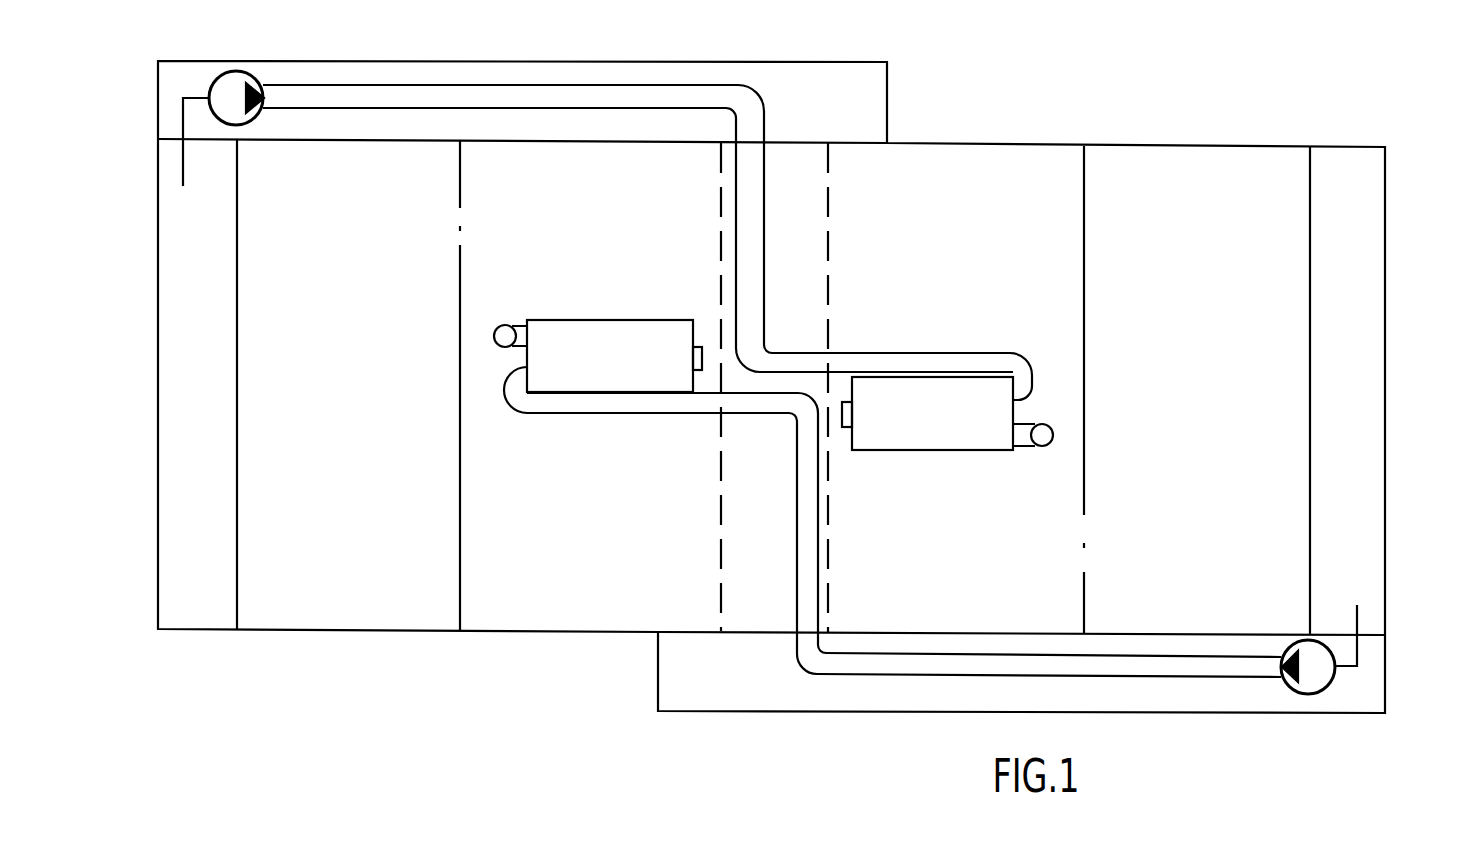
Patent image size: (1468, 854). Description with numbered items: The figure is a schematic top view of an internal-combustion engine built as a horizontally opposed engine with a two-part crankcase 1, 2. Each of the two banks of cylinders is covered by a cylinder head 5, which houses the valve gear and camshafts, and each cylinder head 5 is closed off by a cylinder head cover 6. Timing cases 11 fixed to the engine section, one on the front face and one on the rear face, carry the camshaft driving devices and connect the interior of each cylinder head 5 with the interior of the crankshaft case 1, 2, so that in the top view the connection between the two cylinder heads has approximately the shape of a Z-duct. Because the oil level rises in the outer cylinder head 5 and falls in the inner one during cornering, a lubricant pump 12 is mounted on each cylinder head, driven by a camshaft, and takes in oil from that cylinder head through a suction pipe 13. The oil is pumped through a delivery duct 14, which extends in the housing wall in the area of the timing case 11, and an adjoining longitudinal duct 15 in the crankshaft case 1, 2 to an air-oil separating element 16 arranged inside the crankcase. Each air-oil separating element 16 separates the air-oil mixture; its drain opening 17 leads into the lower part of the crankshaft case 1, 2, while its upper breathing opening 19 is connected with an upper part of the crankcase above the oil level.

The crankcase 1 is at (578, 603).
The crankcase 2 is at (1010, 165).
The cylinder head 5 is at (1198, 163).
The cylinder head cover 6 is at (1350, 162).
The timing case 11 is at (832, 83).
The lubricant pump 12 is at (237, 78).
The suction pipe 13 is at (183, 128).
The delivery duct 14 is at (473, 97).
The longitudinal duct 15 is at (745, 246).
The air-oil separating element 16 is at (585, 373).
The drain opening 17 is at (705, 345).
The breathing opening 19 is at (503, 333).